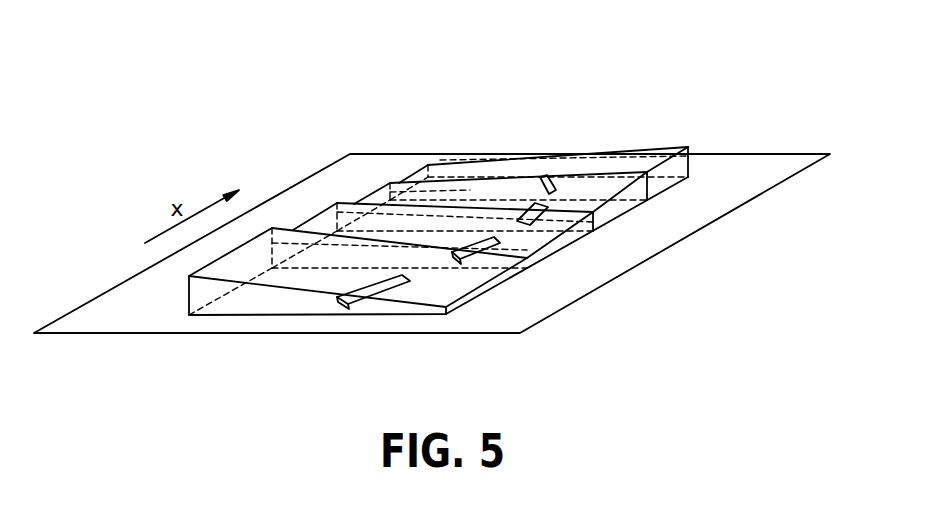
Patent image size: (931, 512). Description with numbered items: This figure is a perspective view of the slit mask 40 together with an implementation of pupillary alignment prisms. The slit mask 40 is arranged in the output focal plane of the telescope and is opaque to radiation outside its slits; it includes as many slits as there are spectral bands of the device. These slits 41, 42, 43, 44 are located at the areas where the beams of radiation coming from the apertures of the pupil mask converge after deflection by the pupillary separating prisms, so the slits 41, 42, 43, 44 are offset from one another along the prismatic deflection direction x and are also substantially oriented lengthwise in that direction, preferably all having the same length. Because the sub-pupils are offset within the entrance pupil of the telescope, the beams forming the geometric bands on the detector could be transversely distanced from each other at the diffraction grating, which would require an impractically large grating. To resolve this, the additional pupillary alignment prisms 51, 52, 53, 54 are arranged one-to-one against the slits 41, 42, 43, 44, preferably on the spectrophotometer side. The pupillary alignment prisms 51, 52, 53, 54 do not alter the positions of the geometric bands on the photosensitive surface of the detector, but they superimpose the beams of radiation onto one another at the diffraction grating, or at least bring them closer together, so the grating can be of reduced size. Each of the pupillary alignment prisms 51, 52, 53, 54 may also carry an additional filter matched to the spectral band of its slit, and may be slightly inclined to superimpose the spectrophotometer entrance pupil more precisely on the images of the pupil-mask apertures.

The slit mask 40 is at (122, 333).
The slit 41 is at (355, 300).
The slit 42 is at (455, 258).
The slit 43 is at (533, 206).
The slit 44 is at (543, 180).
The pupillary alignment prism 51 is at (483, 293).
The pupillary alignment prism 52 is at (563, 248).
The pupillary alignment prism 53 is at (623, 216).
The pupillary alignment prism 54 is at (680, 181).